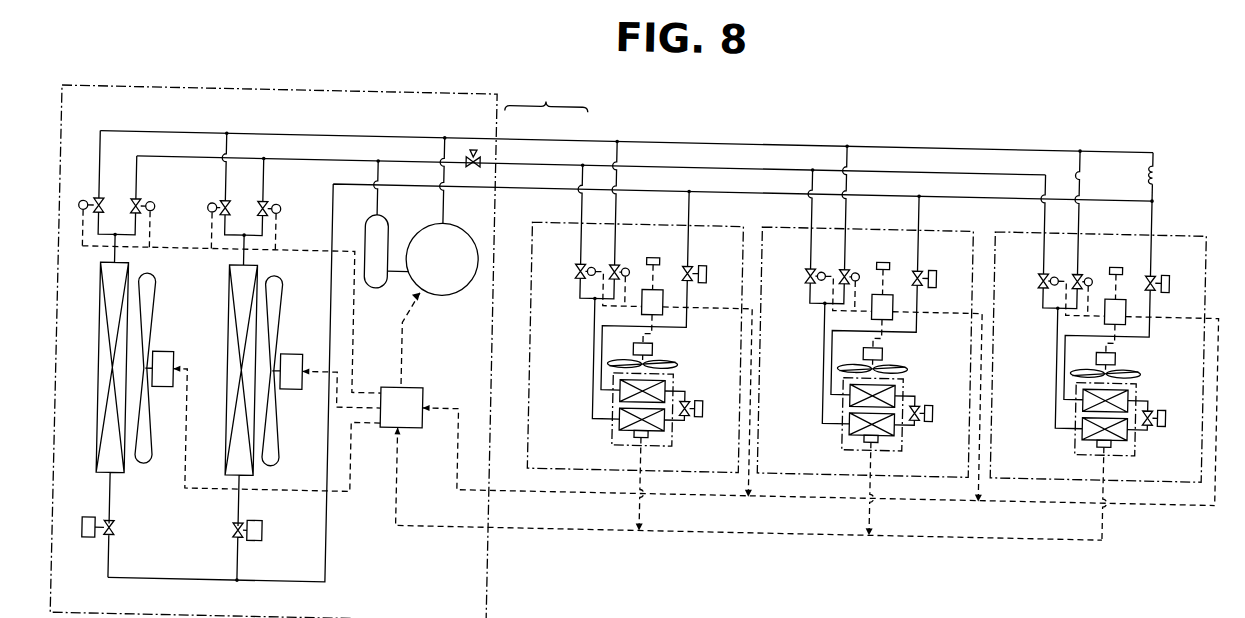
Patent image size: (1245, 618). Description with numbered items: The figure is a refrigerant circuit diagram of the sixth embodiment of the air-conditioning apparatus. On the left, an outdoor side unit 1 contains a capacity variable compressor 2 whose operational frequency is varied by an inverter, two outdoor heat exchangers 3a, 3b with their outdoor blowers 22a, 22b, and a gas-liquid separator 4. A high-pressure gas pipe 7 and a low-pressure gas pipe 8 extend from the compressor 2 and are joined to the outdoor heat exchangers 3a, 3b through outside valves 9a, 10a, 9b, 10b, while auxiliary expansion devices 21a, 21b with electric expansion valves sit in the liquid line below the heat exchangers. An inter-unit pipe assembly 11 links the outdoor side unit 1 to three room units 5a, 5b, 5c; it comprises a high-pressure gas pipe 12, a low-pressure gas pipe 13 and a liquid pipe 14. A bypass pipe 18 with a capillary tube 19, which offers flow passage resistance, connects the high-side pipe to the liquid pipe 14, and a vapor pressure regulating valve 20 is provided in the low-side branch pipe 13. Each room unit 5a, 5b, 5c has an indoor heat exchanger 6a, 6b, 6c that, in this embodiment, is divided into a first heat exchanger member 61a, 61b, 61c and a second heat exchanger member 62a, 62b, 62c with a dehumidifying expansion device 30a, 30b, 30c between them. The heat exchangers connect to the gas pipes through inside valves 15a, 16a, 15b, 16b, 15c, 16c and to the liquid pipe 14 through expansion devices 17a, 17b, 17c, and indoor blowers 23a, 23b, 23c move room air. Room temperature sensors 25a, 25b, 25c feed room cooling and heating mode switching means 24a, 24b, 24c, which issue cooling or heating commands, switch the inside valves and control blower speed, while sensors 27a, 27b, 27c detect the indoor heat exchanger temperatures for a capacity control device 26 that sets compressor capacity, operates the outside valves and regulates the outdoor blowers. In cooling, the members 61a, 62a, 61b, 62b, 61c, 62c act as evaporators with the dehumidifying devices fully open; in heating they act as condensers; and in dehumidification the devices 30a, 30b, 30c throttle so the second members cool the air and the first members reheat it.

The outdoor side unit 1 is at (499, 582).
The capacity variable compressor 2 is at (456, 285).
The outdoor heat exchanger 3a is at (106, 423).
The outdoor heat exchanger 3b is at (235, 420).
The gas-liquid separator 4 is at (379, 280).
The room unit 5a is at (715, 211).
The room unit 5b is at (870, 339).
The room unit 5c is at (1102, 344).
The indoor heat exchanger 6a is at (681, 426).
The indoor heat exchanger 6b is at (894, 425).
The indoor heat exchanger 6c is at (1126, 430).
The high-pressure gas pipe 7 is at (449, 197).
The low-pressure gas pipe 8 is at (381, 197).
The outside valve 9a is at (90, 197).
The outside valve 9b is at (215, 197).
The outside valve 10a is at (154, 197).
The outside valve 10b is at (281, 197).
The inter-unit pipe assembly 11 is at (547, 96).
The high-pressure gas pipe 12 is at (520, 128).
The low-pressure gas pipe 13 is at (543, 153).
The liquid pipe 14 is at (564, 177).
The inside valve 15a is at (622, 250).
The inside valve 15b is at (863, 227).
The inside valve 15c is at (1095, 232).
The inside valve 16a is at (584, 268).
The inside valve 16b is at (821, 249).
The inside valve 16c is at (1054, 255).
The expansion device 17a is at (706, 251).
The expansion device 17b is at (900, 295).
The expansion device 17c is at (1132, 300).
The bypass pipe 18 is at (1161, 168).
The capillary tube 19 is at (1162, 148).
The vapor pressure regulating valve 20 is at (475, 142).
The auxiliary expansion device 21a is at (122, 531).
The auxiliary expansion device 21b is at (272, 531).
The outdoor blower 22a is at (176, 348).
The outdoor blower 22b is at (300, 348).
The indoor blower 23a is at (618, 349).
The indoor blower 23b is at (838, 354).
The indoor blower 23c is at (1071, 359).
The room cooling and heating mode switching means 24a is at (669, 297).
The room cooling and heating mode switching means 24b is at (927, 397).
The room cooling and heating mode switching means 24c is at (1160, 402).
The room temperature sensor 25a is at (650, 259).
The room temperature sensor 25b is at (880, 264).
The room temperature sensor 25c is at (1113, 269).
The capacity control device 26 is at (422, 419).
The sensor 27a is at (642, 423).
The sensor 27b is at (842, 484).
The sensor 27c is at (1075, 489).
The dehumidifying expansion device 30a is at (706, 386).
The dehumidifying expansion device 30b is at (925, 396).
The dehumidifying expansion device 30c is at (1157, 401).
The first heat exchanger member 61a is at (628, 377).
The first heat exchanger member 61b is at (830, 399).
The first heat exchanger member 61c is at (1062, 403).
The second heat exchanger member 62a is at (629, 412).
The second heat exchanger member 62b is at (839, 379).
The second heat exchanger member 62c is at (1072, 383).